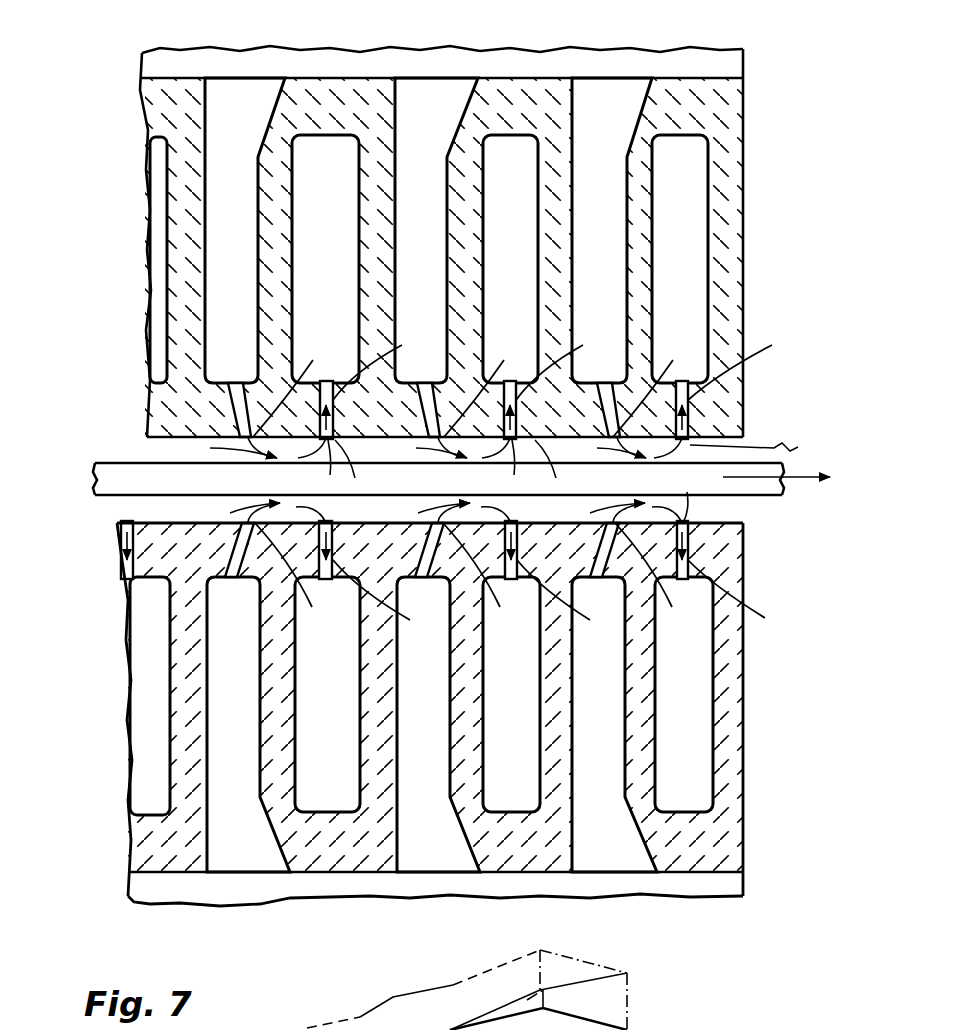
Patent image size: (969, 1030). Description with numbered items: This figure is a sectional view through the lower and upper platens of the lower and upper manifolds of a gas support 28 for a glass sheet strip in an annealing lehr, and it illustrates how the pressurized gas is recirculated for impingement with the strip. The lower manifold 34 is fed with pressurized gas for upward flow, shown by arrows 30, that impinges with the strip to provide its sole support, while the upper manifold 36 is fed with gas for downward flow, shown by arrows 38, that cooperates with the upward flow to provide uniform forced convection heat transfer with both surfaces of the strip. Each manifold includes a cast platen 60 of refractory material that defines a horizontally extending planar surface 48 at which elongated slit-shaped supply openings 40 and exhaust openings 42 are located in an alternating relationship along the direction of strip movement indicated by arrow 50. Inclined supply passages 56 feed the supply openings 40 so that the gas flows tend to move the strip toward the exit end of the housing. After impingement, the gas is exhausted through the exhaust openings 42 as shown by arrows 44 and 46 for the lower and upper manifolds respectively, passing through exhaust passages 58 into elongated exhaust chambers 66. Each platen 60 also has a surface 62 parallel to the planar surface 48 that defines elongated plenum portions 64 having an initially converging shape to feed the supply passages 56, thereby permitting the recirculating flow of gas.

The gas support 28 is at (102, 549).
The arrows indicating upwardly directed pressurized gas 30 is at (228, 512).
The lower manifold 34 is at (748, 872).
The upper manifold 36 is at (748, 70).
The arrows indicating downwardly directed gas flow 38 is at (601, 448).
The supply openings 40 is at (412, 478).
The exhaust openings 42 is at (766, 580).
The arrows indicating exhaust gas flow of lower manifold 44 is at (412, 482).
The arrows indicating exhaust gas flow of upper manifold 46 is at (582, 466).
The planar surface 48 is at (147, 437).
The arrow indicating direction of movement of glass sheet strip 50 is at (782, 497).
The supply passages 56 is at (453, 494).
The exhaust passages 58 is at (530, 493).
The cast platen 60 is at (748, 160).
The surface 62 is at (143, 66).
The plenum portions 64 is at (237, 100).
The exhaust chambers 66 is at (348, 150).